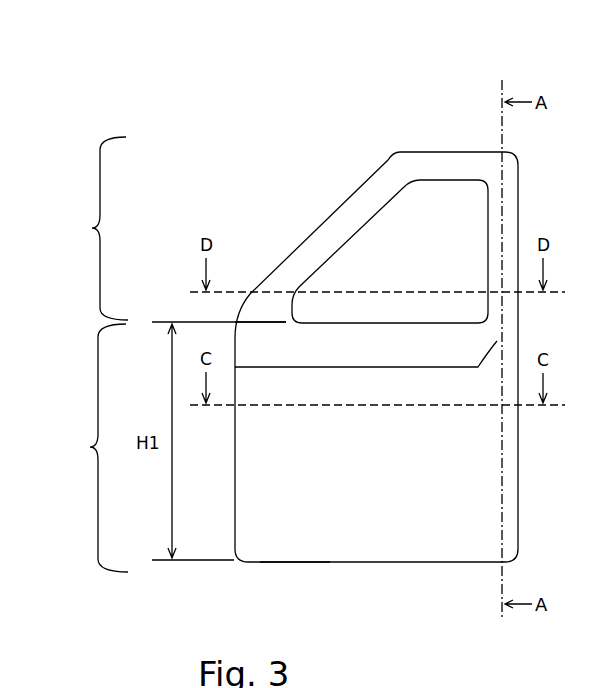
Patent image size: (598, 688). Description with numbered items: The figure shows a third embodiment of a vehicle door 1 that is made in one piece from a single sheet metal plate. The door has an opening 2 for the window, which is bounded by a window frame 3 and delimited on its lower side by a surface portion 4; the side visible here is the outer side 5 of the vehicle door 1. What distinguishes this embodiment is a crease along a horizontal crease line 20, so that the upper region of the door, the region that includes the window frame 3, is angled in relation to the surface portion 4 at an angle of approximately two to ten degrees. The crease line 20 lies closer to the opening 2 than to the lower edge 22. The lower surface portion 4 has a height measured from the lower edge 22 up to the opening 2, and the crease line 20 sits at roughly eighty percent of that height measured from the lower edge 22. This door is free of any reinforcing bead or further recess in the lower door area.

The vehicle door 1 is at (331, 170).
The opening 2 is at (406, 254).
The window frame 3 is at (92, 228).
The surface portion 4 is at (90, 447).
The outer side 5 is at (481, 468).
The crease line 20 is at (497, 341).
The lower edge 22 is at (299, 574).